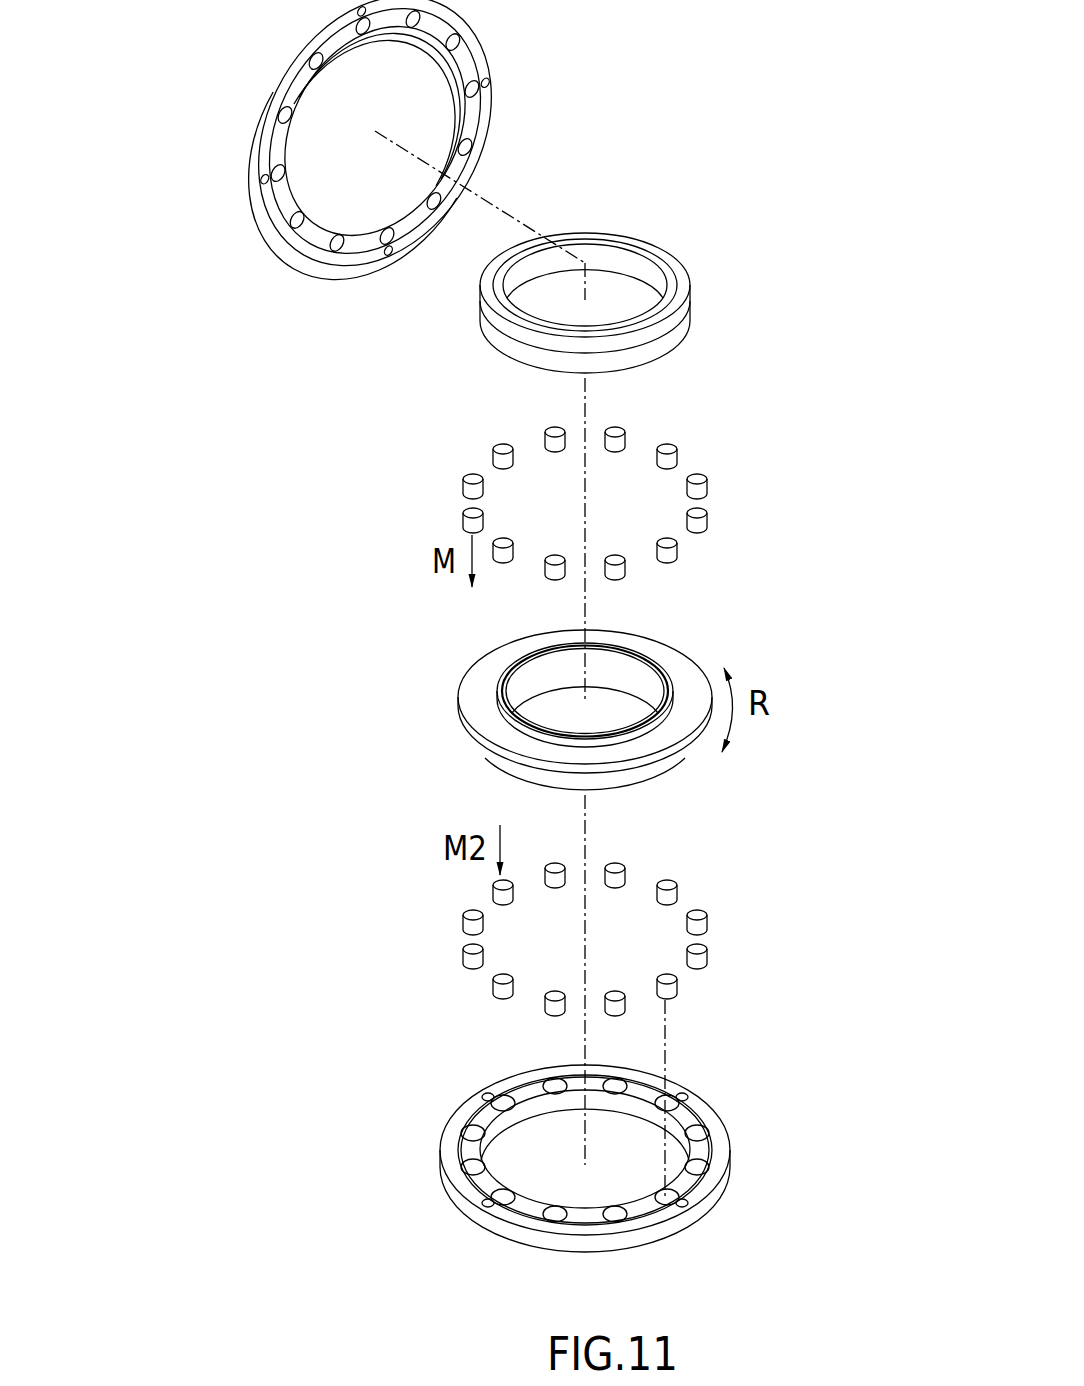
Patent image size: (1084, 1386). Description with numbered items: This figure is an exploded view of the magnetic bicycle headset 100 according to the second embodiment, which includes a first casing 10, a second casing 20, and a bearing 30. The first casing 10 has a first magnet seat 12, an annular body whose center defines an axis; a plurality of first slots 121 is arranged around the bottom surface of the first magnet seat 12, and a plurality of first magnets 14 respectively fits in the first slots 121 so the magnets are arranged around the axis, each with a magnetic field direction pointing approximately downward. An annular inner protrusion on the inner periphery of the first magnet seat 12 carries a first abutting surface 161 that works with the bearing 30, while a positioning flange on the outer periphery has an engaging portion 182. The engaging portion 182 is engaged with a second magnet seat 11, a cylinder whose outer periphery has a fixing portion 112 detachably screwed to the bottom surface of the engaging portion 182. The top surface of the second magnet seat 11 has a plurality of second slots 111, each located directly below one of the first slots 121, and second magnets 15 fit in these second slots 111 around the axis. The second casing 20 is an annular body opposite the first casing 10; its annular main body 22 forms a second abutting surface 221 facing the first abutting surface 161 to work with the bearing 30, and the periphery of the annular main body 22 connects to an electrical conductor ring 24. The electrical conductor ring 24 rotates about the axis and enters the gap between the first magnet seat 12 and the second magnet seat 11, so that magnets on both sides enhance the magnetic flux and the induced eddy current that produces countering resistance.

The magnetic bicycle headset 100 is at (692, 148).
The first casing 10 is at (389, 178).
The first magnet seat 12 is at (375, 142).
The first slots 121 is at (375, 130).
The first abutting surface 161 is at (374, 134).
The engaging portion 182 is at (482, 117).
The bearing 30 is at (680, 298).
The first magnets 14 is at (703, 490).
The second magnets 15 is at (703, 962).
The second casing 20 is at (542, 693).
The annular main body 22 is at (535, 677).
The second abutting surface 221 is at (512, 712).
The electrical conductor ring 24 is at (478, 705).
The second magnet seat 11 is at (584, 1165).
The second slots 111 is at (700, 1132).
The fixing portion 112 is at (717, 1157).